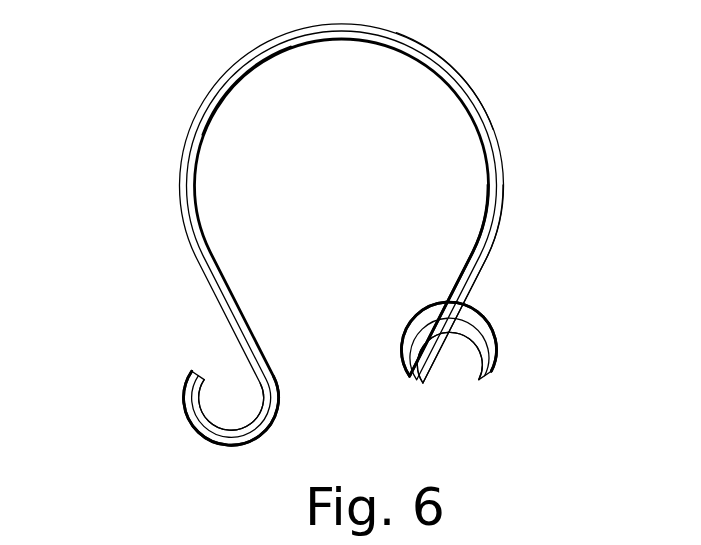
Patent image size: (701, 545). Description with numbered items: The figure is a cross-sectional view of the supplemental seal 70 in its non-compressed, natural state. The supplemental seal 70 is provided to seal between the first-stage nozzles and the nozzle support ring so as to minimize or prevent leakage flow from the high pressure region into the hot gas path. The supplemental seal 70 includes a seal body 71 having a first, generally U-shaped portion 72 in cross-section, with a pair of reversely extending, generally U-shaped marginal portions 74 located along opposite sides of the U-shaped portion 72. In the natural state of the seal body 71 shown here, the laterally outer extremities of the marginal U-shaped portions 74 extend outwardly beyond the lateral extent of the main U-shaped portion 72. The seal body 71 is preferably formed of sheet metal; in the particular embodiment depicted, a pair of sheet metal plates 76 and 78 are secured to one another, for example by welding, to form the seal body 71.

The supplemental seal 70 is at (118, 187).
The seal body 71 is at (225, 95).
The first generally U-shaped portion 72 is at (467, 88).
The generally U-shaped marginal portions 74 is at (190, 418).
The sheet metal plate 76 is at (480, 202).
The sheet metal plate 78 is at (490, 238).